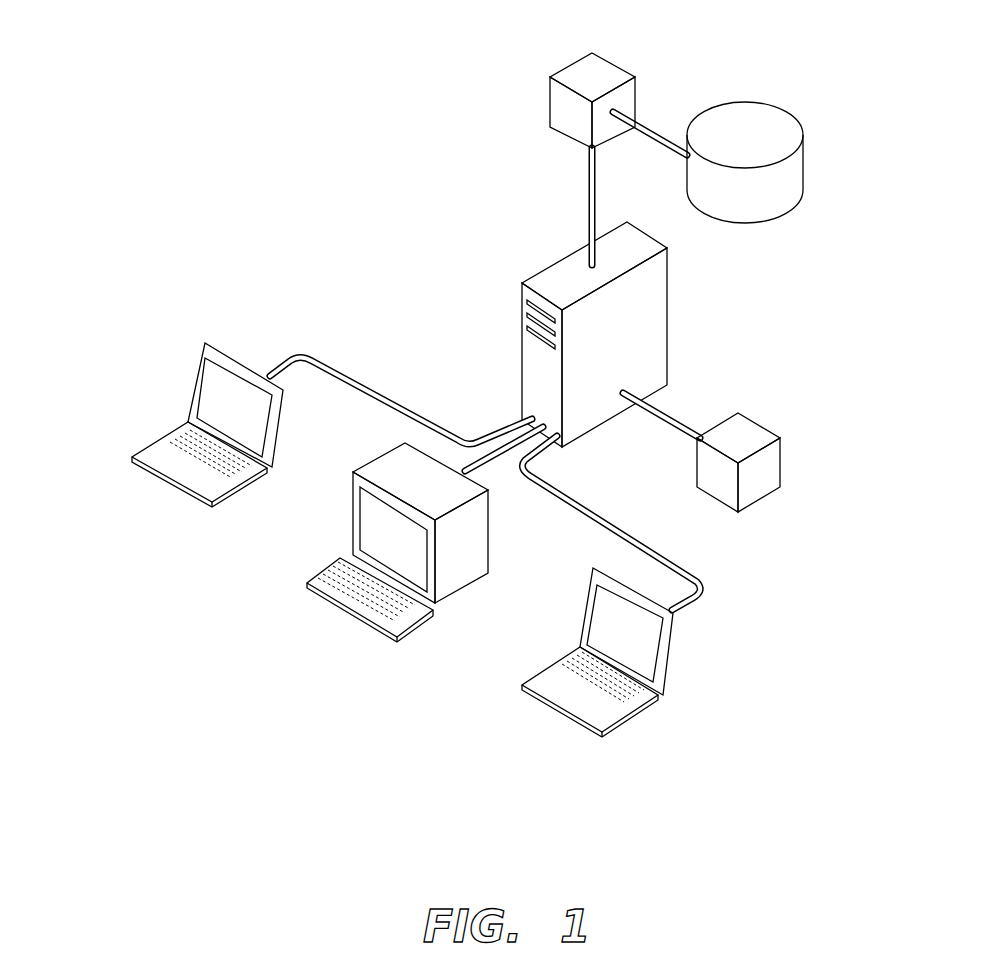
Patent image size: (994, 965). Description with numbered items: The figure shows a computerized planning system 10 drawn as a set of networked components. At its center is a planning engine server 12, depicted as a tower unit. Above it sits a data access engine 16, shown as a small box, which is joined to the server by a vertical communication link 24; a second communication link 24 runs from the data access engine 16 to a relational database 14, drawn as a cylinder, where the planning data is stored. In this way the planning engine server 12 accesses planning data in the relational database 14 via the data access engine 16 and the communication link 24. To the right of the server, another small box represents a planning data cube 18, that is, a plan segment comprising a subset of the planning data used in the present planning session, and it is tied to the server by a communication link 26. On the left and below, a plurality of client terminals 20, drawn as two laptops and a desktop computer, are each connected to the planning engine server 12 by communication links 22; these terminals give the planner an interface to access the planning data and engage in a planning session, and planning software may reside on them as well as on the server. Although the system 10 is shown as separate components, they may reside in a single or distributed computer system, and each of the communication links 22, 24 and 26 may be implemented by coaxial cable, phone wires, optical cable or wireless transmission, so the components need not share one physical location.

The planning system 10 is at (250, 66).
The planning engine server 12 is at (643, 322).
The relational database 14 is at (745, 162).
The data access engine 16 is at (558, 105).
The planning data cube 18 is at (768, 468).
The client terminals 20 is at (135, 483).
The communication links 22 is at (393, 398).
The communication link 24 is at (653, 130).
The communication link 26 is at (675, 425).